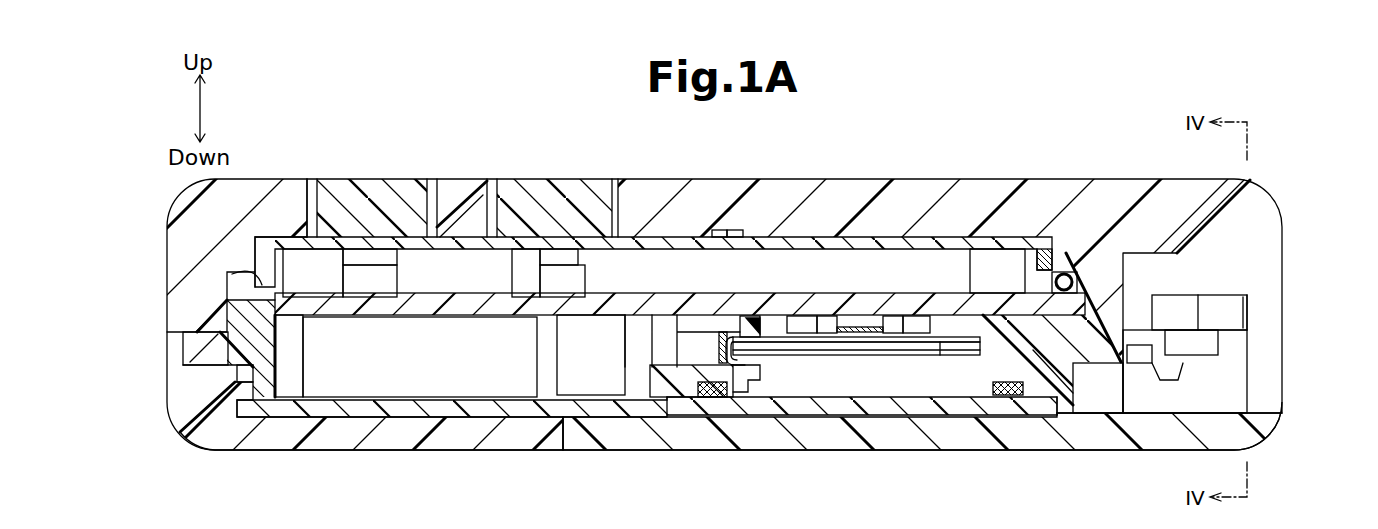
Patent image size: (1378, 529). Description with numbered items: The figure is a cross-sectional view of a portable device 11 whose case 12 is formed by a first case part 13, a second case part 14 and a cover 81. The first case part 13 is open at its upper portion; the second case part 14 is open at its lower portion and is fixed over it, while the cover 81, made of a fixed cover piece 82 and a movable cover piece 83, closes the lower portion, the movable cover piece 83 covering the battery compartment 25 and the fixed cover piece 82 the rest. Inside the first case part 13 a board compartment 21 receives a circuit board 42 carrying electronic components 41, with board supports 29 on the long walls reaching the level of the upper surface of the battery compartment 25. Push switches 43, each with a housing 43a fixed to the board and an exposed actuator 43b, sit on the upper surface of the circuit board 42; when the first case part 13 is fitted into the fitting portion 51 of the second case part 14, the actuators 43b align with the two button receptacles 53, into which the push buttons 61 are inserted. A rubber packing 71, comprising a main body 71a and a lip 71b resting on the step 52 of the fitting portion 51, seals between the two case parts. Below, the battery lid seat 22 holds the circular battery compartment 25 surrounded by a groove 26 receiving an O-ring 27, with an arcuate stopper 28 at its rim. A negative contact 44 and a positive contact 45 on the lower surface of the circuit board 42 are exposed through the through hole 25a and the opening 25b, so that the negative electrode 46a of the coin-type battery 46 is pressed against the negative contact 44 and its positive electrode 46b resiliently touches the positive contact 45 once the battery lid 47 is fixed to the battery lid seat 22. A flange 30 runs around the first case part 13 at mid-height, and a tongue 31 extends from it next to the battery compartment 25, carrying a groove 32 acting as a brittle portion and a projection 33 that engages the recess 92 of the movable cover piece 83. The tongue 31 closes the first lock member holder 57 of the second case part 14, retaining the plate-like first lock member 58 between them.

The portable device 11 is at (1123, 131).
The case 12 is at (118, 270).
The first case part 13 is at (203, 348).
The second case part 14 is at (183, 285).
The cover 81 is at (699, 447).
The fixed cover piece 82 is at (525, 443).
The movable cover piece 83 is at (922, 452).
The board compartment 21 is at (293, 390).
The battery lid seat 22 is at (1040, 400).
The battery compartment 25 is at (879, 308).
The through hole 25a is at (795, 317).
The opening 25b is at (757, 317).
The groove 26 is at (713, 397).
The O-ring 27 is at (1010, 395).
The stopper 28 is at (748, 397).
The board support 29 is at (658, 343).
The flange 30 is at (1098, 353).
The tongue 31 is at (1237, 343).
The groove 32 is at (1138, 362).
The projection 33 is at (1165, 380).
The electronic components 41 is at (478, 383).
The circuit board 42 is at (503, 303).
The push switch 43 is at (480, 273).
The housing 43a is at (383, 280).
The actuator 43b is at (383, 257).
The negative contact 44 is at (860, 326).
The positive contact 45 is at (718, 345).
The battery 46 is at (853, 358).
The negative electrode 46a is at (948, 322).
The positive electrode 46b is at (735, 350).
The battery lid 47 is at (897, 410).
The fitting portion 51 is at (1078, 300).
The step 52 is at (1044, 237).
The button receptacle 53 is at (431, 181).
The first lock member holder 57 is at (1237, 312).
The first lock member 58 is at (1183, 300).
The push button 61 is at (368, 181).
The packing 71 is at (823, 237).
The main body 71a is at (887, 237).
The lip 71b is at (1057, 270).
The recess 92 is at (1178, 368).